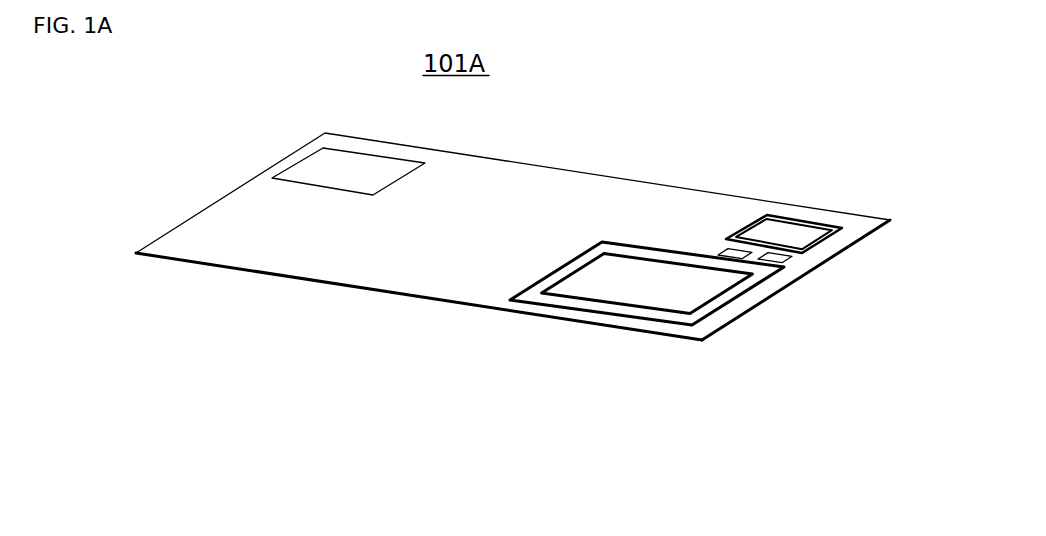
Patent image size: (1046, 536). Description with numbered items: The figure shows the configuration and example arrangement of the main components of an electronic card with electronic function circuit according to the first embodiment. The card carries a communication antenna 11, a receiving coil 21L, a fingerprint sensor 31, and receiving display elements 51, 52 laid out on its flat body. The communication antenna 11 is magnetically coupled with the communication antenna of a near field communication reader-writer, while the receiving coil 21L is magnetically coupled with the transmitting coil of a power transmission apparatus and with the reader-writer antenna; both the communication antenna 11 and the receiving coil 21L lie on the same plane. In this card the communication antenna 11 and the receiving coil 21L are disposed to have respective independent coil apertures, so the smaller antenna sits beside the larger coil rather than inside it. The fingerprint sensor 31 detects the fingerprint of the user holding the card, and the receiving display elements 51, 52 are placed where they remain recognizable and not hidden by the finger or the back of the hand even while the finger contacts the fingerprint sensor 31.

The fingerprint sensor 31 is at (325, 168).
The receiving coil 21L is at (633, 250).
The communication antenna 11 is at (820, 227).
The receiving display element 51 is at (778, 257).
The receiving display element 52 is at (735, 250).